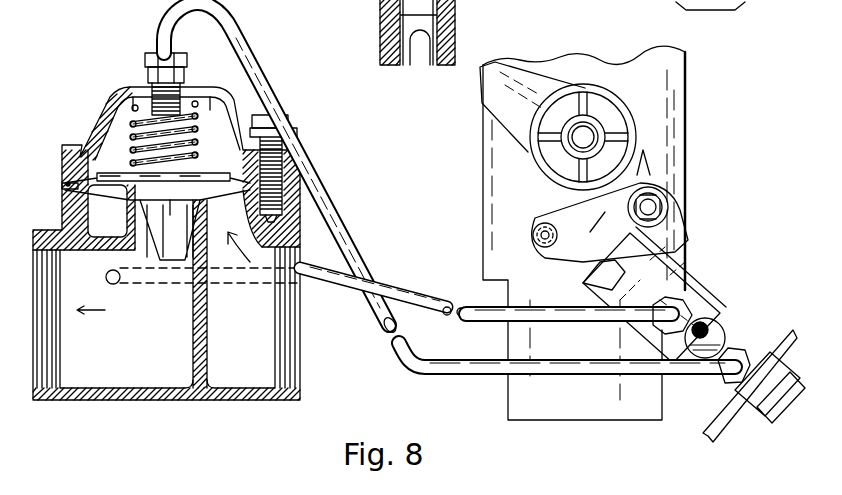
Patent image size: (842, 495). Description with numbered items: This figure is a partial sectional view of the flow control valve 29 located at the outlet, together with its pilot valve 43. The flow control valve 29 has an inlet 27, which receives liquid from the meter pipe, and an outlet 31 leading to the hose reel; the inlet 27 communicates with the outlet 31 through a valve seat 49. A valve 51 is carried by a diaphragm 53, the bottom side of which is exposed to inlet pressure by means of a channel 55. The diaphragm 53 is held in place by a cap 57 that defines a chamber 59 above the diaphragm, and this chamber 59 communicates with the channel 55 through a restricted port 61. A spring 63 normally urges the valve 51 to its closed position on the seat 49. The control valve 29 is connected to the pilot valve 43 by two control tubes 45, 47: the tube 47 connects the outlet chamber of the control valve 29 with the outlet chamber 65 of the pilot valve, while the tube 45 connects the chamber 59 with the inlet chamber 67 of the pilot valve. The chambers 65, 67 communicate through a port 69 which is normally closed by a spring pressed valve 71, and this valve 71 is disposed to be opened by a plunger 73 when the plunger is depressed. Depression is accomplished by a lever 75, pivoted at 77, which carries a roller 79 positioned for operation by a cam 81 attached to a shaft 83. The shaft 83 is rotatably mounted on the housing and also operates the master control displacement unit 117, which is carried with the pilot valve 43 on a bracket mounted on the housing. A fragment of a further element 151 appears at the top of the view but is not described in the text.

The inlet 27 is at (290, 342).
The flow control valve 29 is at (167, 421).
The outlet 31 is at (43, 335).
The pilot valve 43 is at (712, 272).
The control tube 45 is at (402, 347).
The control tube 47 is at (463, 305).
The valve seat 49 is at (200, 205).
The valve 51 is at (197, 193).
The diaphragm 53 is at (68, 184).
The channel 55 is at (98, 223).
The cap 57 is at (124, 93).
The chamber 59 is at (118, 137).
The restricted port 61 is at (110, 190).
The spring 63 is at (133, 120).
The outlet chamber 65 is at (712, 303).
The inlet chamber 67 is at (745, 320).
The port 69 is at (662, 340).
The spring pressed valve 71 is at (712, 333).
The plunger 73 is at (597, 244).
The lever 75 is at (563, 247).
The pivot 77 is at (650, 207).
The roller 79 is at (537, 222).
The cam 81 is at (480, 107).
The shaft 83 is at (583, 140).
The master control displacement unit 117 is at (698, 126).
The housing fragment 151 is at (442, 4).